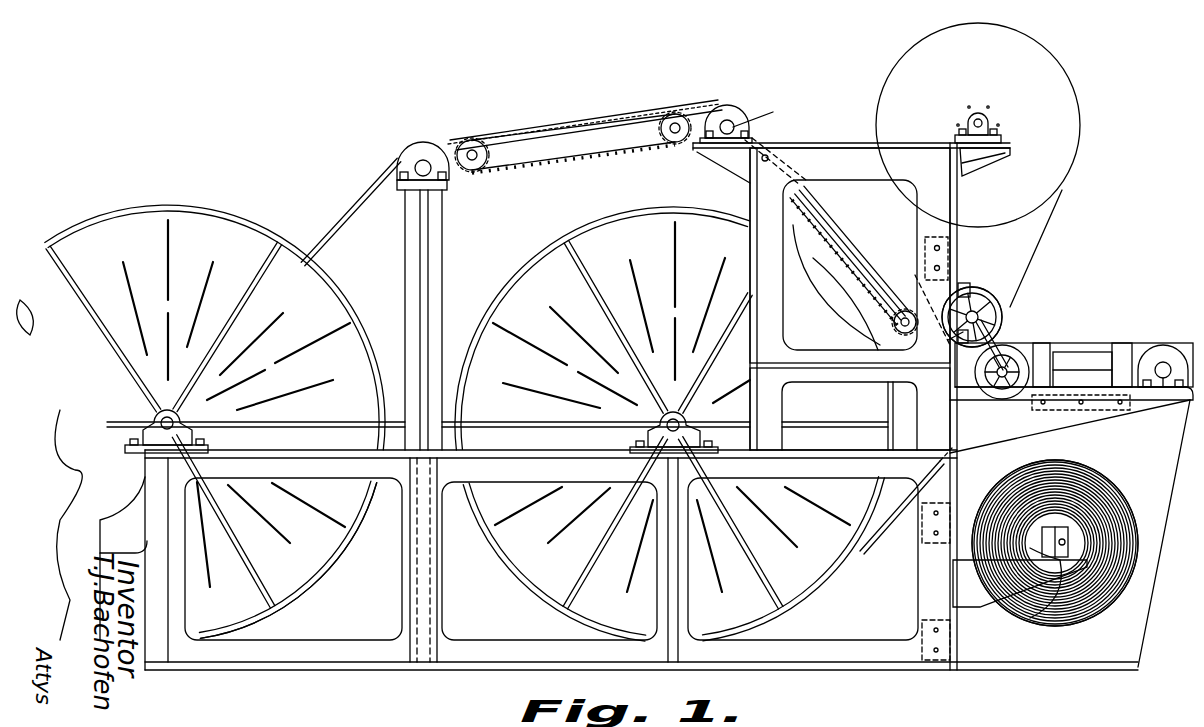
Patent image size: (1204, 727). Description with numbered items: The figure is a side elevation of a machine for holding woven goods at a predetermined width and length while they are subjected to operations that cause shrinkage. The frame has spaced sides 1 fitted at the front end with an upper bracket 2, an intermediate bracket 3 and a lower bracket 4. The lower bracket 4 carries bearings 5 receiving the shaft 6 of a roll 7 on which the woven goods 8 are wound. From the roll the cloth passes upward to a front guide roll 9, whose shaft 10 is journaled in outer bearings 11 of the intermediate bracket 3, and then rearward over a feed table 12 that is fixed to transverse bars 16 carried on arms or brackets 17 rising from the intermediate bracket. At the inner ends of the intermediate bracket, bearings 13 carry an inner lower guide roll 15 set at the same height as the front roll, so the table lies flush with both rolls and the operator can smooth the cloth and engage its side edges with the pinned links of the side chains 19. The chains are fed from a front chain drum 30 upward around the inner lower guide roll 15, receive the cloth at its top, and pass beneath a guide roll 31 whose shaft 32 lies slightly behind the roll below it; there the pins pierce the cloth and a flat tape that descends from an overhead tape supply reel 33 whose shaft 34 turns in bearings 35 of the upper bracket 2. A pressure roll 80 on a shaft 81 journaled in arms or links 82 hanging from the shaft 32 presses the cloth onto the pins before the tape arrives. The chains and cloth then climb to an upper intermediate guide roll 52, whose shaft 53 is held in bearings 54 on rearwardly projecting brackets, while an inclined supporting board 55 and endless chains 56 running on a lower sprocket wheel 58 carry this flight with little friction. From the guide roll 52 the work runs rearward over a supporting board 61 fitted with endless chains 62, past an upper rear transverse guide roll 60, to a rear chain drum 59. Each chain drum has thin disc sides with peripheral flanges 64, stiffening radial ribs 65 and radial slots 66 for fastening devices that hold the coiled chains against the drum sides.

The sides 1 is at (512, 665).
The upper bracket 2 is at (992, 162).
The intermediate bracket 3 is at (1072, 425).
The lower bracket 4 is at (968, 606).
The bearings 5 is at (1120, 622).
The shaft 6 is at (1112, 582).
The roll 7 is at (1070, 530).
The woven goods 8 is at (1045, 618).
The front guide roll 9 is at (1163, 345).
The shaft 10 is at (1163, 395).
The outer bearings 11 is at (1168, 395).
The feed table 12 is at (1088, 343).
The bearings 13 is at (1042, 366).
The inner lower guide roll 15 is at (963, 376).
The transverse bars 16 is at (1125, 352).
The arms or brackets 17 is at (1042, 384).
The side chains 19 is at (906, 506).
The chain drum 30 is at (530, 587).
The guide roll 31 is at (970, 296).
The shaft 32 is at (1000, 298).
The tape supply reel 33 is at (1062, 166).
The shaft 34 is at (990, 120).
The bearings 35 is at (968, 120).
The upper intermediate guide roll 52 is at (738, 112).
The shaft 53 is at (767, 114).
The bearings 54 is at (720, 168).
The inclined supporting board 55 is at (858, 258).
The endless chains 56 is at (836, 236).
The lower sprocket wheel 58 is at (862, 318).
The rear chain drum 59 is at (292, 587).
The upper rear transverse guide roll 60 is at (414, 150).
The supporting board 61 is at (530, 136).
The endless chains 62 is at (527, 172).
The peripheral flanges 64 is at (340, 556).
The radial ribs 65 is at (268, 265).
The radial slots 66 is at (286, 322).
The pressure roll 80 is at (1026, 352).
The shaft 81 is at (1003, 335).
The arms or links 82 is at (940, 346).